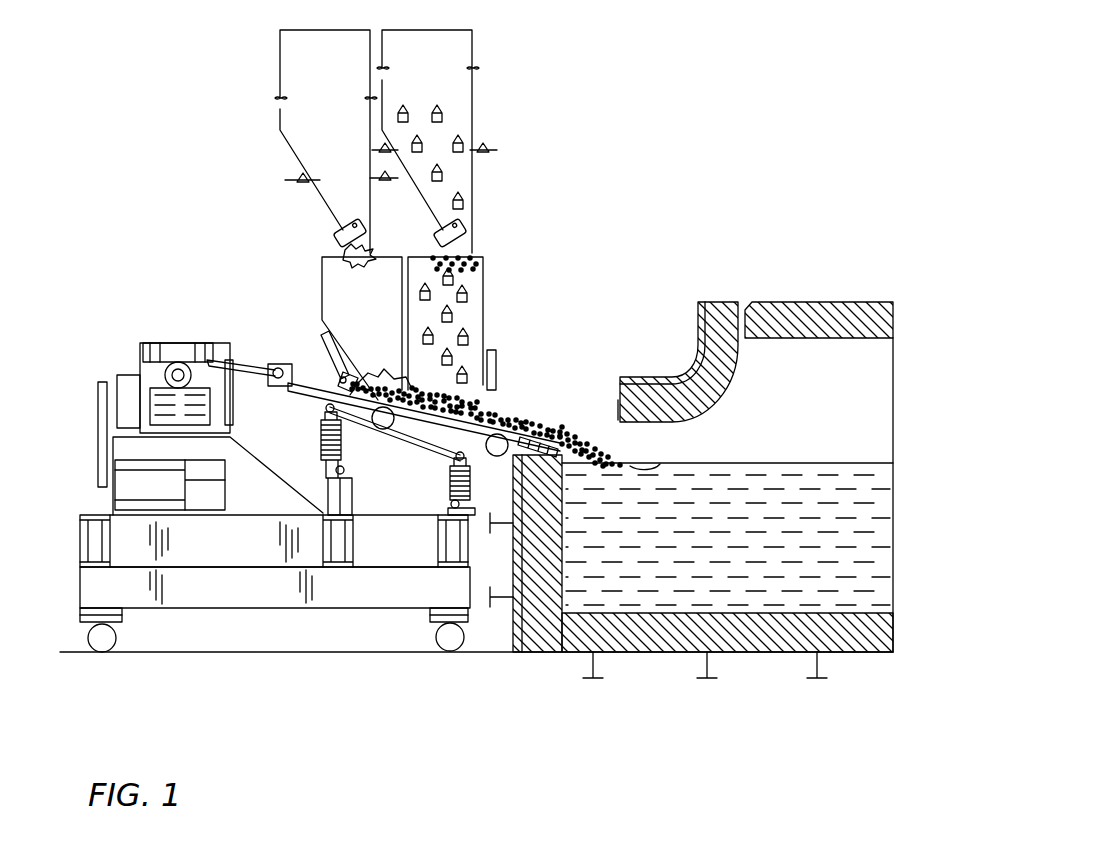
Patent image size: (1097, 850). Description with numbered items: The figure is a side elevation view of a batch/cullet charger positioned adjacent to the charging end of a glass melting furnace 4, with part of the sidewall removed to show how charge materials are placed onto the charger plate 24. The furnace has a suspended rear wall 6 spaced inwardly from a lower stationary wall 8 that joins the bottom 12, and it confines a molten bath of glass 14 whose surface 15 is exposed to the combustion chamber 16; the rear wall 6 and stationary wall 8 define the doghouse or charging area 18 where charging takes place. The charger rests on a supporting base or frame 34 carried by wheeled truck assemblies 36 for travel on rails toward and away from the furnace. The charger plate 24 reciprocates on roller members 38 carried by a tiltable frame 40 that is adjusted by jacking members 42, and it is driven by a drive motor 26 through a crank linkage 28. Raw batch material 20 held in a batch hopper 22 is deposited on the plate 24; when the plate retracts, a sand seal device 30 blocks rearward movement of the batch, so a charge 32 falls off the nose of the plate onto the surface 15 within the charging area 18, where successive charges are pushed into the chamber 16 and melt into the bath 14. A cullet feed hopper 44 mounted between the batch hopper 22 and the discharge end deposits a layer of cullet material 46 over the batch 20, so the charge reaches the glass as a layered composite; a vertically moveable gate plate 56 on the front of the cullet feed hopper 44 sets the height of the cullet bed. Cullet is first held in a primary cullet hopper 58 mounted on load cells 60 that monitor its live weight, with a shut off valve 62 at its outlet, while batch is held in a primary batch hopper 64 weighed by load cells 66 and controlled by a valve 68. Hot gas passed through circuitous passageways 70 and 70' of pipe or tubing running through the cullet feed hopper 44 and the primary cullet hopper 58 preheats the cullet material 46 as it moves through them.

The glass melting furnace 4 is at (770, 283).
The suspended rear wall 6 is at (718, 302).
The lower stationary wall 8 is at (520, 560).
The bottom 12 is at (682, 637).
The molten bath of glass 14 is at (770, 598).
The surface 15 is at (810, 463).
The combustion chamber 16 is at (800, 402).
The doghouse or charging area 18 is at (605, 397).
The raw batch material 20 is at (378, 392).
The batch hopper 22 is at (322, 282).
The charger plate 24 is at (313, 390).
The drive motor 26 is at (127, 385).
The crank linkage 28 is at (243, 365).
The sand seal device 30 is at (325, 365).
The charge 32 is at (620, 448).
The supporting base or frame 34 is at (290, 600).
The wheeled truck assemblies 36 is at (110, 625).
The roller members 38 is at (386, 429).
The tiltable frame 40 is at (427, 437).
The jacking members 42 is at (322, 445).
The cullet feed hopper 44 is at (483, 268).
The cullet material 46 is at (483, 375).
The gate plate 56 is at (496, 353).
The primary cullet hopper 58 is at (466, 60).
The load cells 60 is at (490, 148).
The shut off valve 62 is at (433, 233).
The primary batch hopper 64 is at (282, 70).
The load cells 66 is at (300, 181).
The valve 68 is at (340, 233).
The circuitous passageways 70 is at (484, 325).
The circuitous passageways 70' is at (477, 157).